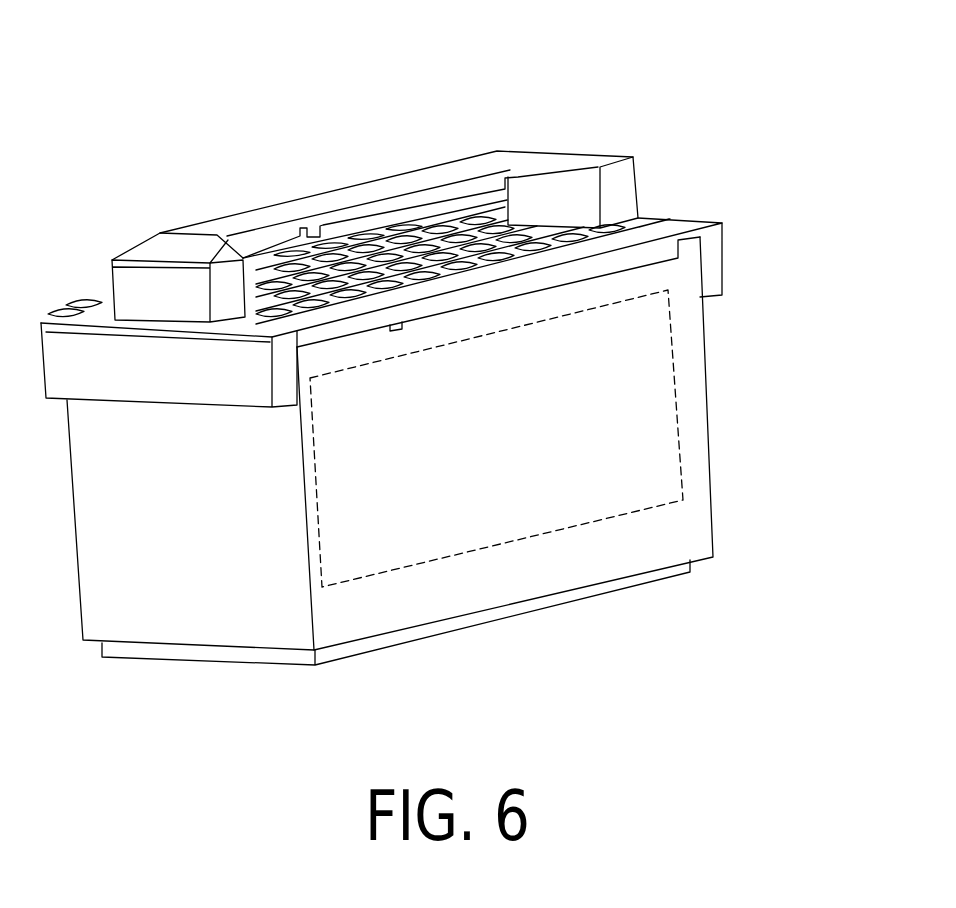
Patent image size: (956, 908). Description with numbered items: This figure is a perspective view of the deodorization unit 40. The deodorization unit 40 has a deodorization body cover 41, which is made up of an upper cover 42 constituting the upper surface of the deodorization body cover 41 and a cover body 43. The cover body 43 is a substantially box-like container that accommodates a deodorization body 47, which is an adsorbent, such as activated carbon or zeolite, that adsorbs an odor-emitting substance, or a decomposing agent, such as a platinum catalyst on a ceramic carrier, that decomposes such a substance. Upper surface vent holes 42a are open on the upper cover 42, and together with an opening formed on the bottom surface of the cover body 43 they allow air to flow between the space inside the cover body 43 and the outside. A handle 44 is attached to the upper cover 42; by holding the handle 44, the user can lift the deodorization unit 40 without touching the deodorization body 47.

The deodorization unit 40 is at (537, 102).
The deodorization body cover 41 is at (809, 176).
The upper cover 42 is at (667, 229).
The upper surface vent holes 42a is at (352, 244).
The cover body 43 is at (690, 318).
The handle 44 is at (433, 180).
The deodorization body 47 is at (405, 562).